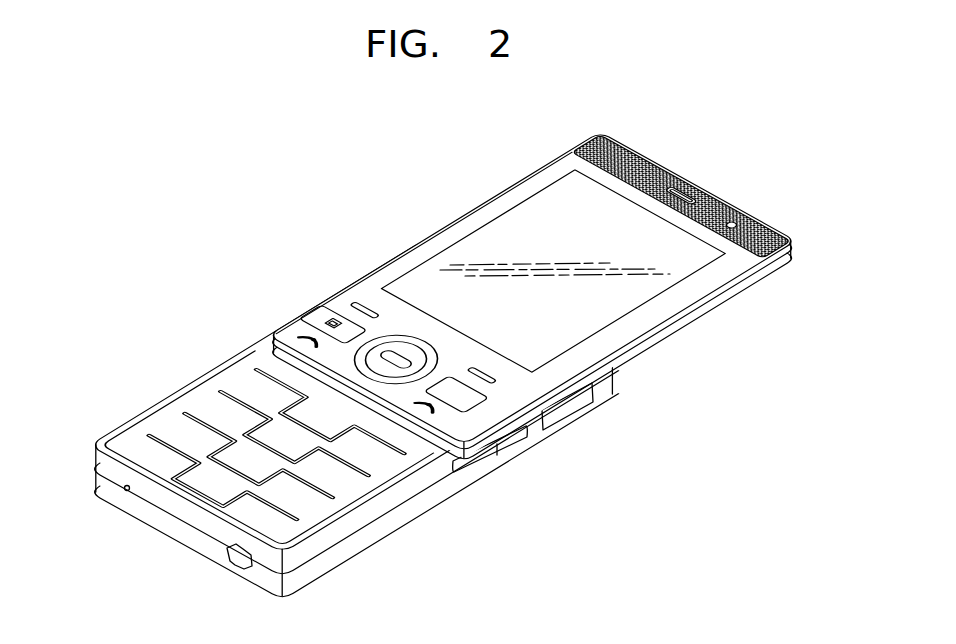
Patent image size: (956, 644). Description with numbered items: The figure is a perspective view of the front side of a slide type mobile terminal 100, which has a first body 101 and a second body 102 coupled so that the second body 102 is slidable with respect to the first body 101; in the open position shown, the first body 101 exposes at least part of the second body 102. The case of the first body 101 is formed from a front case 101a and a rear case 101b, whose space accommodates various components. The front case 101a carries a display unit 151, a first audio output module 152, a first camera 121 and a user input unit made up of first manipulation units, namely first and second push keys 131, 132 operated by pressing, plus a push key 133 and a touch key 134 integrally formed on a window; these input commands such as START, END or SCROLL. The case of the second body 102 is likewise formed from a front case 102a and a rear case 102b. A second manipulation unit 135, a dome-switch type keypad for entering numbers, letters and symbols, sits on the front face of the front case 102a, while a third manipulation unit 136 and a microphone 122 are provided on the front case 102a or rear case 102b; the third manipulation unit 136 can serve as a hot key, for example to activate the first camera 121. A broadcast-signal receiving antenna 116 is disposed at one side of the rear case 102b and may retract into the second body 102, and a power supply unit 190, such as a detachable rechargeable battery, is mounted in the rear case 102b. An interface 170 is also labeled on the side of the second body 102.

The mobile terminal 100 is at (432, 368).
The first body 101 is at (515, 296).
The front case 101a is at (731, 277).
The rear case 101b is at (697, 309).
The second body 102 is at (372, 422).
The front case 102a is at (614, 378).
The rear case 102b is at (612, 400).
The broadcast-signal receiving antenna 116 is at (231, 556).
The first camera 121 is at (681, 196).
The microphone 122 is at (122, 491).
The first push key 131 is at (395, 359).
The second push key 132 is at (333, 324).
The push key 133 is at (311, 340).
The touch key 134 is at (365, 310).
The second manipulation unit 135 is at (268, 448).
The third manipulation unit 136 is at (510, 444).
The display unit 151 is at (554, 271).
The first audio output module 152 is at (681, 196).
The interface unit 170 is at (568, 411).
The power supply unit 190 is at (379, 540).